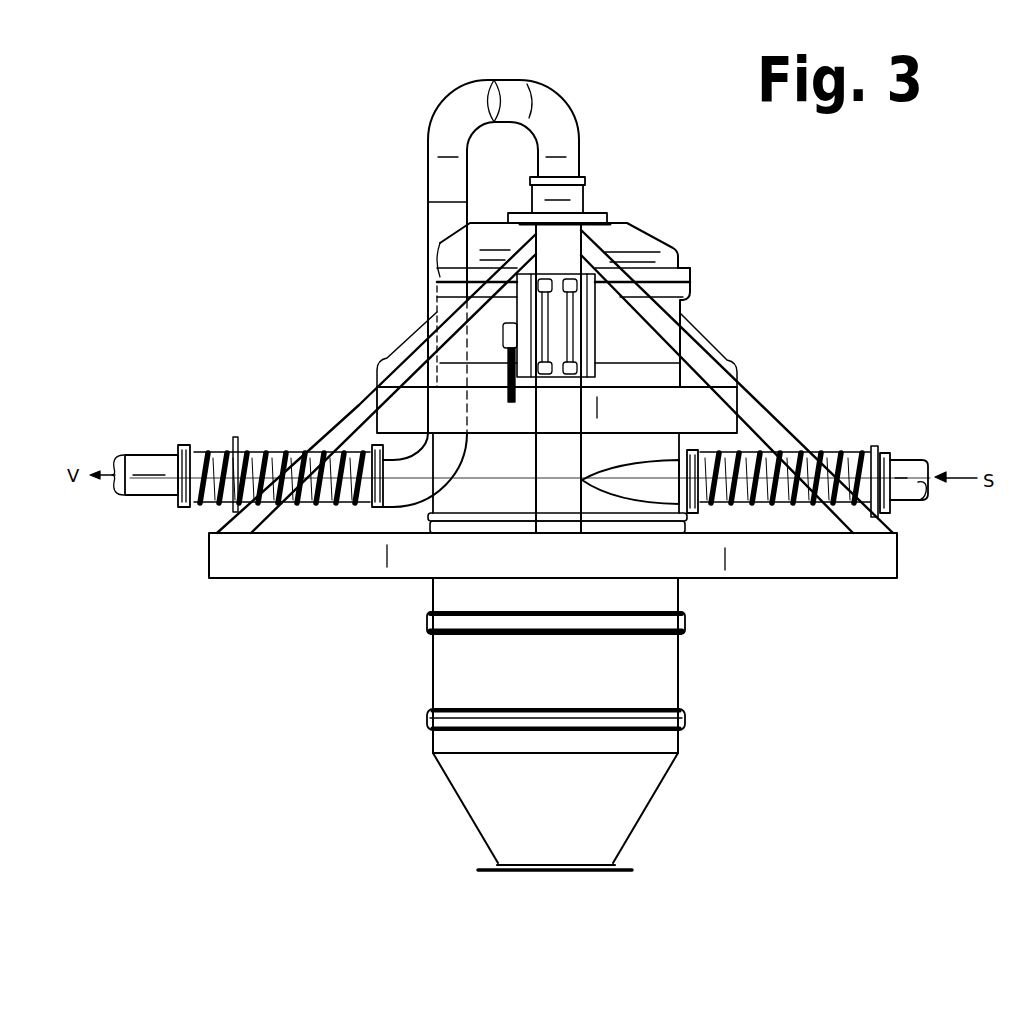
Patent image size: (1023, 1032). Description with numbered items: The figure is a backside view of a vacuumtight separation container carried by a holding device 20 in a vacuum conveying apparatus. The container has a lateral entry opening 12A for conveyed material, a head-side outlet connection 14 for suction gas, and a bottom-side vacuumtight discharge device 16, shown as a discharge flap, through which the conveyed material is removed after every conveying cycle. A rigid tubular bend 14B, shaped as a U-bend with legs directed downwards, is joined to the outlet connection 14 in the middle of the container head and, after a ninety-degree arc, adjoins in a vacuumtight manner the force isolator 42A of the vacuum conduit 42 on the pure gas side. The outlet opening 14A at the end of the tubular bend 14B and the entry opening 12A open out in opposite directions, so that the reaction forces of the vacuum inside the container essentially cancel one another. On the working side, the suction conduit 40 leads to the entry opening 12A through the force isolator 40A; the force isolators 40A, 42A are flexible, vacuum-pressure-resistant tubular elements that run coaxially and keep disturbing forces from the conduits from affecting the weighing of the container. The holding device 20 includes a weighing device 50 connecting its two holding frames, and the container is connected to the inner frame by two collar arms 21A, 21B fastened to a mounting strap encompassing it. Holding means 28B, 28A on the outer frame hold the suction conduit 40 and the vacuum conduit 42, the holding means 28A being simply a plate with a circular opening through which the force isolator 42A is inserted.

The tubular bend 14B is at (554, 93).
The outlet connection 14 is at (585, 198).
The weighing device 50 is at (600, 328).
The holding device 20 is at (849, 342).
The collar arm 21A is at (714, 334).
The collar arm 21B is at (400, 337).
The vacuum conduit 42 is at (227, 450).
The force isolator 42A is at (244, 462).
The holding means 28A is at (230, 505).
The holding means 28B is at (870, 446).
The outlet opening 14A is at (397, 503).
The force isolator 40A is at (757, 507).
The entry opening 12A is at (687, 492).
The suction conduit 40 is at (774, 534).
The discharge device 16 is at (582, 873).